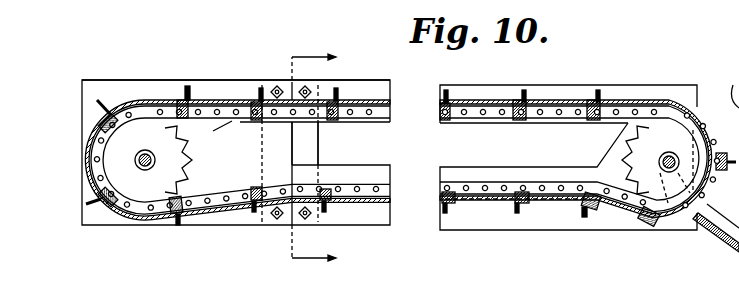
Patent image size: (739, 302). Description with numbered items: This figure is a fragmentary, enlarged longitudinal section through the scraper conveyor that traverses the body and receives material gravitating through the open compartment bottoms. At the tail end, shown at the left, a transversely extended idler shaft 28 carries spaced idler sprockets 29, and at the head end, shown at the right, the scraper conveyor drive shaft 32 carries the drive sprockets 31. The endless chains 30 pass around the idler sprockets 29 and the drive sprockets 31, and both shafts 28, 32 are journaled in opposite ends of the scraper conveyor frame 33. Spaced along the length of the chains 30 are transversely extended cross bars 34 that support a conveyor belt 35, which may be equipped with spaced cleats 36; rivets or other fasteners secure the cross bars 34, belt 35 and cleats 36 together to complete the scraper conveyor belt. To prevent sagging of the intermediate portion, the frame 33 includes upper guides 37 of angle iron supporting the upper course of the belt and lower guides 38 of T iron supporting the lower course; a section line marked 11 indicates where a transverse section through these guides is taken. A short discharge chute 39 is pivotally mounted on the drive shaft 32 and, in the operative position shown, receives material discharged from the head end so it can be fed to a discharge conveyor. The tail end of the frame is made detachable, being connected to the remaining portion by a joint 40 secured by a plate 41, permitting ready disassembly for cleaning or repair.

The section line 11- 11 is at (309, 161).
The idler shaft 28 is at (148, 170).
The idler sprockets 29 is at (197, 157).
The endless chains 30 is at (85, 150).
The drive sprockets 31 is at (633, 150).
The scraper conveyor drive shaft 32 is at (672, 147).
The scraper conveyor frame 33 is at (233, 80).
The cross bars 34 is at (178, 104).
The conveyor belt 35 is at (208, 100).
The cleats 36 is at (187, 86).
The upper guides 37 is at (478, 126).
The lower guides 38 is at (488, 200).
The discharge chute 39 is at (726, 242).
The joint 40 is at (292, 95).
The plate 41 is at (316, 156).